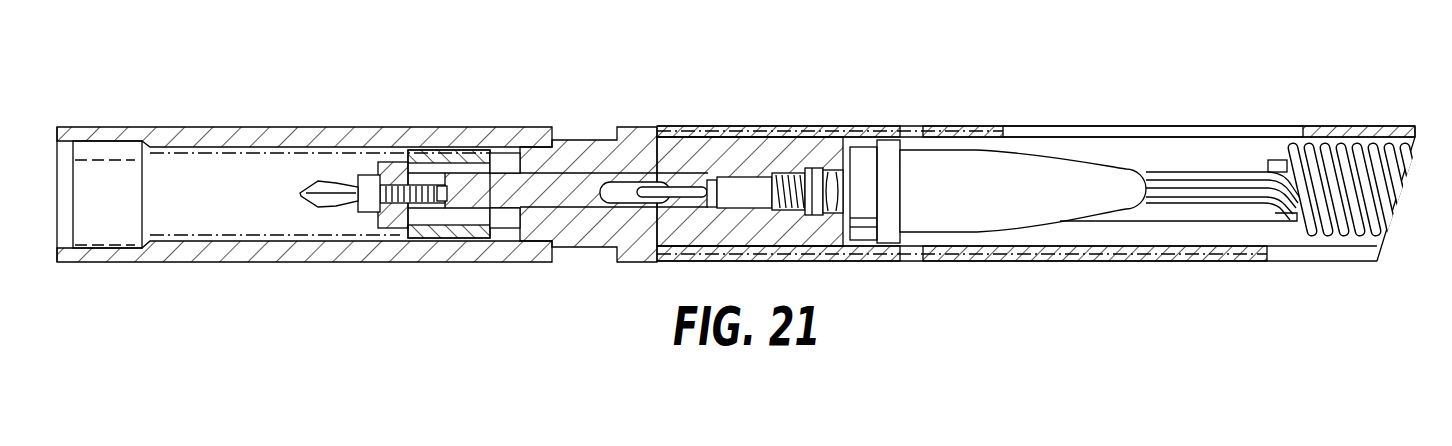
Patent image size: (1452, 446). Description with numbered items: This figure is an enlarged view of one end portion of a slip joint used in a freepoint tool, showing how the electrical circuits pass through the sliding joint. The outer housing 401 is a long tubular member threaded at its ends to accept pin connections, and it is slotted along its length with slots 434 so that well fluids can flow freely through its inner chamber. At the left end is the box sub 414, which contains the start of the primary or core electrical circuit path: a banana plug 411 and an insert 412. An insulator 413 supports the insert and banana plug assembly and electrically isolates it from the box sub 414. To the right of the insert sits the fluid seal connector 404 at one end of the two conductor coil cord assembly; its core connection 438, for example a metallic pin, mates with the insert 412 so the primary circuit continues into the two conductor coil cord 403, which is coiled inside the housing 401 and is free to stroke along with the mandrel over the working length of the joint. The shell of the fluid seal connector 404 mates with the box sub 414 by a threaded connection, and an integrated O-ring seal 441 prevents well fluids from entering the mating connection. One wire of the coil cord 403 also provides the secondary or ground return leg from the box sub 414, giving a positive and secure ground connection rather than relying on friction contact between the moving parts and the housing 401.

The housing 401 is at (1078, 262).
The two conductor coil cord 403 is at (1362, 170).
The fluid seal connector 404 is at (962, 170).
The banana plug 411 is at (336, 178).
The insert 412 is at (398, 162).
The insulator 413 is at (484, 168).
The box sub 414 is at (242, 140).
The slots 434 is at (1160, 131).
The core connection 438 is at (694, 180).
The O-ring seal 441 is at (818, 168).